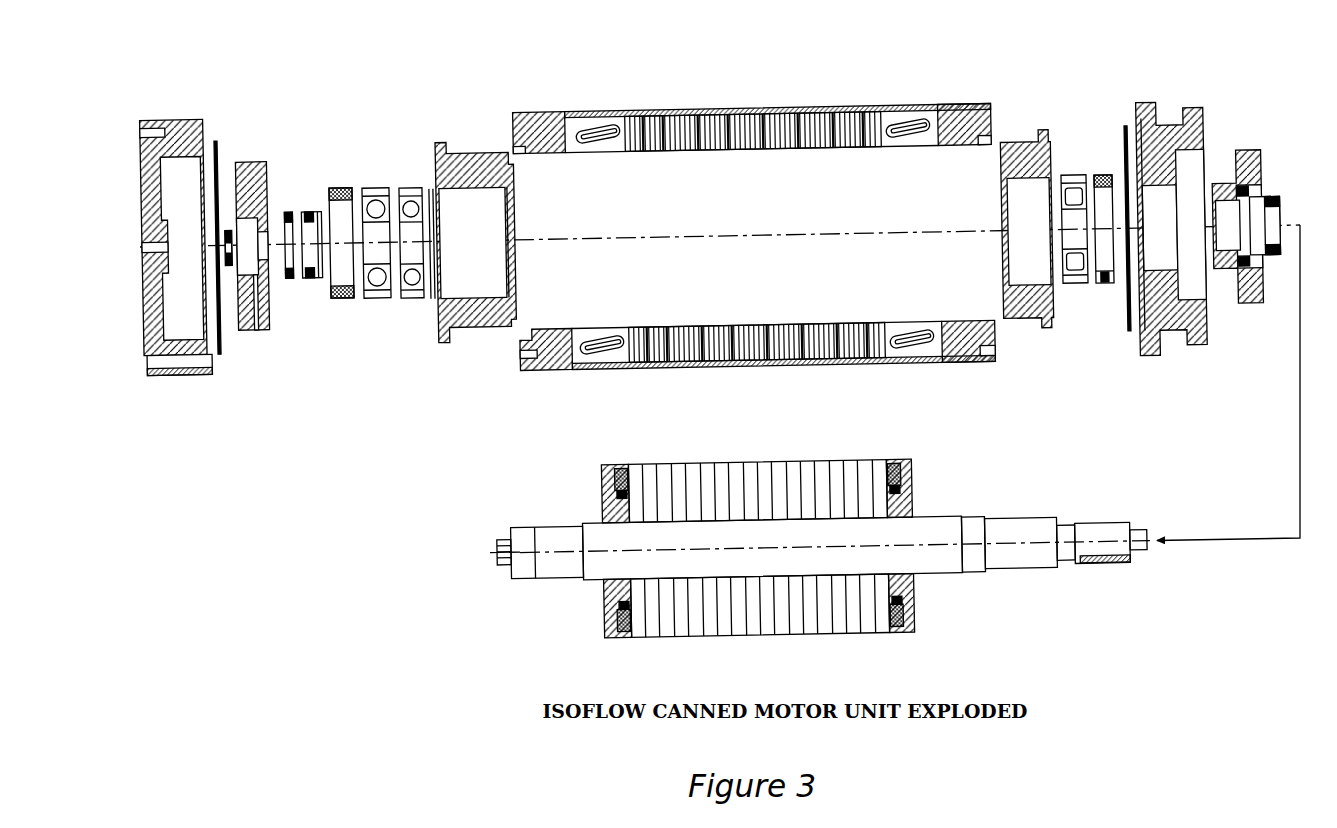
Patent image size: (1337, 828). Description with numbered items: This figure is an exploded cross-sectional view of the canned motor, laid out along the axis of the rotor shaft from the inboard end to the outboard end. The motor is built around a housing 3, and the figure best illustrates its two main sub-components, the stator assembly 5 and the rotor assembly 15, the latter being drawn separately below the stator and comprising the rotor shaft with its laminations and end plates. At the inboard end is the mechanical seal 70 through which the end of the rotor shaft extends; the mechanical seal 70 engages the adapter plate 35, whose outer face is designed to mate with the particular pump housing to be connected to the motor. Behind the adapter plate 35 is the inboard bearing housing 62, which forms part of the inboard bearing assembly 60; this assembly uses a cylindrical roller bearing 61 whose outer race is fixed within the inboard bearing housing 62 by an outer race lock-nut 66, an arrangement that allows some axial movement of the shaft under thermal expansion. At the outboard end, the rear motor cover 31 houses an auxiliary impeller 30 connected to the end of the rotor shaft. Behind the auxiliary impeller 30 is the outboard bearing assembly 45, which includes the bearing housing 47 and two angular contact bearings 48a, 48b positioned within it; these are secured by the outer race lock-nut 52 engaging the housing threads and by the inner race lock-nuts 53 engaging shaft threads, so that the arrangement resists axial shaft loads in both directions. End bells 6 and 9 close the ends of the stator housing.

The housing 3 is at (815, 105).
The stator assembly 5 is at (762, 201).
The front end bell 6 is at (533, 112).
The rear end bell 9 is at (965, 105).
The rotor assembly 15 is at (943, 487).
The auxiliary impeller 30 is at (247, 162).
The rear motor cover 31 is at (180, 120).
The adapter plate 35 is at (1182, 108).
The outboard bearing assembly 45 is at (378, 314).
The bearing housing 47 is at (462, 153).
The front bearing 48a is at (410, 188).
The front bearing 48b is at (378, 188).
The outer race lock-nut 52 is at (336, 188).
The inner race lock-nuts 53 is at (311, 212).
The inboard bearing assembly 60 is at (1125, 192).
The cylindrical roller bearing 61 is at (1074, 165).
The inboard bearing housing 62 is at (1018, 142).
The outer race lock-nut 66 is at (1105, 285).
The mechanical seal 70 is at (1255, 140).